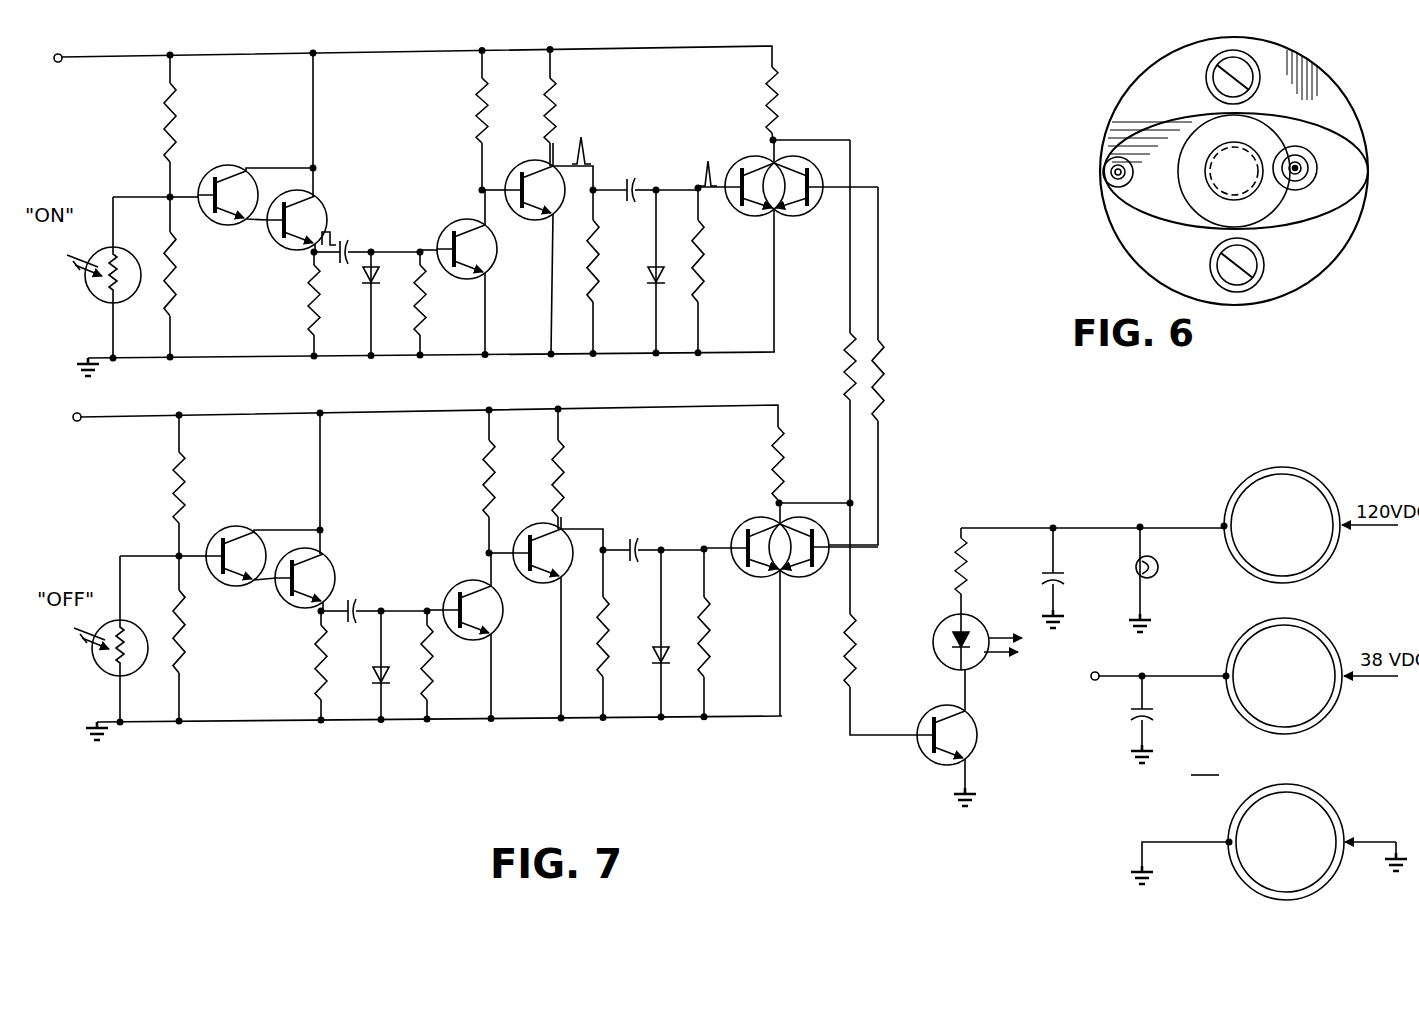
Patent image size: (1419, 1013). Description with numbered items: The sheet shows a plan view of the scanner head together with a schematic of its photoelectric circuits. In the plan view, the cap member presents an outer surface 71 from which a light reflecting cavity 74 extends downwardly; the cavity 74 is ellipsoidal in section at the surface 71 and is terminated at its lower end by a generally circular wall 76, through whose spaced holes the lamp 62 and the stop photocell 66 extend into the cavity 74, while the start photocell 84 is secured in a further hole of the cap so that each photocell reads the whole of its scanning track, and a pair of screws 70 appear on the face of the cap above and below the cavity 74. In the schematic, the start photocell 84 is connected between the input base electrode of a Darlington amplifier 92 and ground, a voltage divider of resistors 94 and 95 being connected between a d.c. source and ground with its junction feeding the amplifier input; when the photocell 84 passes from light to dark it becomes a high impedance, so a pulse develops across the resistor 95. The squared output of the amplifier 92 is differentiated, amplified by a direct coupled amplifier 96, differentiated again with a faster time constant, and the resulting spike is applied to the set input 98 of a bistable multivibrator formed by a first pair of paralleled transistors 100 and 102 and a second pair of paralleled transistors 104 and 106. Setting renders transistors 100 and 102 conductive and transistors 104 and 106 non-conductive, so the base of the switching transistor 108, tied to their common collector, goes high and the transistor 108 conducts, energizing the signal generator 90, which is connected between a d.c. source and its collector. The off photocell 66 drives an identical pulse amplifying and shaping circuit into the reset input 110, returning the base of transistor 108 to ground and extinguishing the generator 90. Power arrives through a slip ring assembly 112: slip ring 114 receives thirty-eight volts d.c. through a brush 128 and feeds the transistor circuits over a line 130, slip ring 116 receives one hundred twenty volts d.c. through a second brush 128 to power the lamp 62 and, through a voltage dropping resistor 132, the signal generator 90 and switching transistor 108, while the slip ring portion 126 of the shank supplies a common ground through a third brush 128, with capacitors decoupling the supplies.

In FIG. 7, the lamp 62 is at (1155, 571).
In FIG. 6, the lamp 62 is at (1210, 190).
In FIG. 7, the stop photocell 66 is at (119, 678).
In FIG. 6, the stop photocell 66 is at (1308, 163).
In FIG. 6, the screw 70 is at (1250, 70).
In FIG. 6, the surface 71 is at (1338, 240).
In FIG. 6, the light reflecting cavity 74 is at (1348, 180).
In FIG. 6, the circular wall 76 is at (1268, 140).
In FIG. 7, the start photocell 84 is at (107, 248).
In FIG. 6, the start photocell 84 is at (1101, 168).
In FIG. 7, the signal generator 90 is at (974, 617).
In FIG. 7, the Darlington amplifier 92 is at (280, 165).
In FIG. 7, the resistor 94 is at (165, 119).
In FIG. 7, the resistor 95 is at (172, 312).
In FIG. 7, the direct coupled amplifier 96 is at (468, 186).
In FIG. 7, the set input 98 is at (711, 192).
In FIG. 7, the transistor 100 is at (749, 157).
In FIG. 7, the transistor 102 is at (816, 162).
In FIG. 7, the transistor 104 is at (745, 520).
In FIG. 7, the transistor 106 is at (792, 577).
In FIG. 7, the switching transistor 108 is at (938, 766).
In FIG. 7, the reset input 110 is at (716, 554).
In FIG. 7, the slip ring assembly 112 is at (1211, 761).
In FIG. 7, the slip ring 114 is at (1332, 642).
In FIG. 7, the slip ring 116 is at (1324, 479).
In FIG. 7, the slip ring portion 126 is at (1337, 812).
In FIG. 7, the carbon brush 128 is at (1336, 530).
In FIG. 7, the line 130 is at (61, 55).
In FIG. 7, the voltage dropping resistor 132 is at (971, 564).